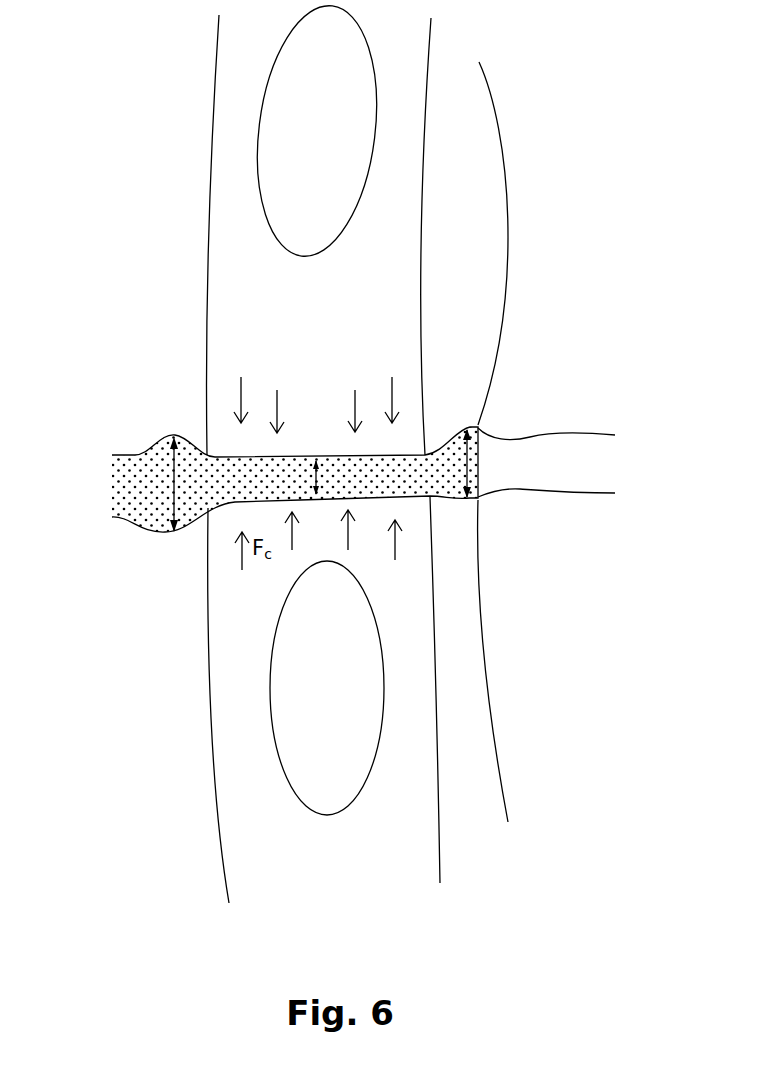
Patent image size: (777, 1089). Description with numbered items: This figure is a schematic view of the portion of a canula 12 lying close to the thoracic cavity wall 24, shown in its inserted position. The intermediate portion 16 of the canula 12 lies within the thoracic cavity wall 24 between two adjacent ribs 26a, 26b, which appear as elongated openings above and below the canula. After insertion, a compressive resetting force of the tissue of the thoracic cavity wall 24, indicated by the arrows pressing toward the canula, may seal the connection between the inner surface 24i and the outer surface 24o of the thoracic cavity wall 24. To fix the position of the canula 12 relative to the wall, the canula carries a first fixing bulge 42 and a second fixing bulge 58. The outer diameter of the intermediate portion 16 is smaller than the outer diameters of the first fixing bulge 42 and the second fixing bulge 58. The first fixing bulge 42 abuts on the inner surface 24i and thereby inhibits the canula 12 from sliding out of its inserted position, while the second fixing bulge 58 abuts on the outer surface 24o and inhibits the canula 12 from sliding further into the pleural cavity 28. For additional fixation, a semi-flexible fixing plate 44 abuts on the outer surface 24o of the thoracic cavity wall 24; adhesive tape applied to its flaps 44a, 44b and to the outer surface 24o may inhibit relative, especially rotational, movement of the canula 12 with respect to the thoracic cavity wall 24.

The canula 12 is at (593, 432).
The intermediate portion 16 is at (320, 413).
The thoracic cavity wall 24 is at (334, 477).
The inner surface 24i is at (210, 730).
The outer surface 24o is at (440, 843).
The rib 26a is at (295, 258).
The rib 26b is at (331, 815).
The pleural cavity 28 is at (168, 187).
The first fixing bulge 42 is at (155, 534).
The fixing plate 44 is at (575, 442).
The flap 44a is at (503, 165).
The flap 44b is at (488, 676).
The second fixing bulge 58 is at (483, 407).